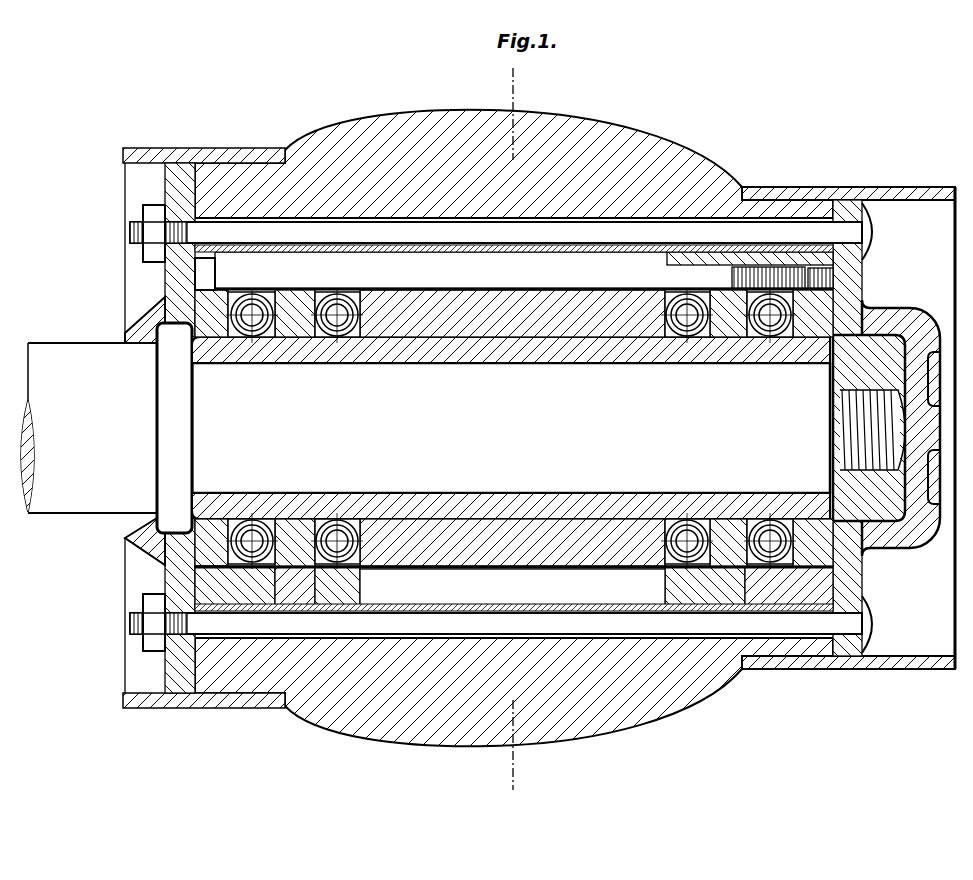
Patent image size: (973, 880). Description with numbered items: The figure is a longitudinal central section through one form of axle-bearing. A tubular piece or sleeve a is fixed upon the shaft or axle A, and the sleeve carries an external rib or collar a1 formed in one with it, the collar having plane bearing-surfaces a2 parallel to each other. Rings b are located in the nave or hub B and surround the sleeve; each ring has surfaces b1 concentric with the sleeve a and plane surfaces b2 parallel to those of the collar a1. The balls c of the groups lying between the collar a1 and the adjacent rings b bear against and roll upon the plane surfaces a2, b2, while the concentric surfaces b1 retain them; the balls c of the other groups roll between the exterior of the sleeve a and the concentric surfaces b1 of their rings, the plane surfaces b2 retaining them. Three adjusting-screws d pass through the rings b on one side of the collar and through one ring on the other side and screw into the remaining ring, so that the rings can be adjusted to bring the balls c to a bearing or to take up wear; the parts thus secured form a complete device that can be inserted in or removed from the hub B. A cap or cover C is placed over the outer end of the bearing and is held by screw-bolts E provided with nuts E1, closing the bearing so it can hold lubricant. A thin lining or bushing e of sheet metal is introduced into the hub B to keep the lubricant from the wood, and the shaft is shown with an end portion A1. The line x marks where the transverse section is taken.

The shaft or axle A is at (463, 428).
The collar on shaft A1 is at (174, 428).
The nave or hub B is at (539, 428).
The cap or cover C is at (886, 428).
The screw-bolts E is at (501, 428).
The nuts E1 is at (152, 597).
The tubular piece or sleeve a is at (511, 428).
The external rib or collar a1 is at (512, 428).
The plane bearing-surfaces a2 is at (361, 323).
The rings b is at (514, 448).
The concentric surfaces b1 is at (352, 293).
The plane surfaces b2 is at (554, 428).
The balls c is at (511, 428).
The adjusting-screws d is at (514, 271).
The lining or bushing e is at (529, 606).
The section line x is at (512, 430).